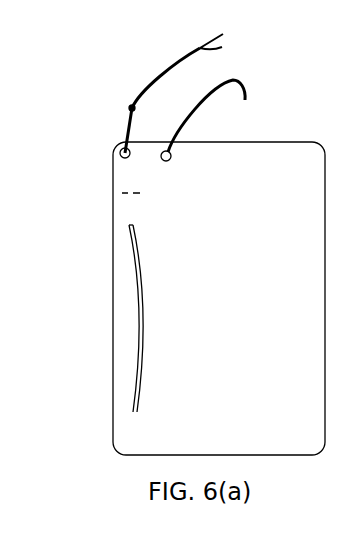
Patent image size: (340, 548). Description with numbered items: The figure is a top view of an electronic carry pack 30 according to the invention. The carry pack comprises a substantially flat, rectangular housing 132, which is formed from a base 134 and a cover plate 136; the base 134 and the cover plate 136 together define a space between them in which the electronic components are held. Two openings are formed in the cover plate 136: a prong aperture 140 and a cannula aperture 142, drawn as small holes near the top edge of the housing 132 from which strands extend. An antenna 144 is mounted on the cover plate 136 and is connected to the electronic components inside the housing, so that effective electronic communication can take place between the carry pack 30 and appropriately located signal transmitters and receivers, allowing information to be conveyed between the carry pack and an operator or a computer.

The tag assembly 30 is at (73, 316).
The housing 132 is at (113, 412).
The base 134 is at (113, 193).
The cover plate 136 is at (125, 363).
The prong aperture 140 is at (118, 156).
The cannula aperture 142 is at (172, 156).
The antenna 144 is at (137, 260).